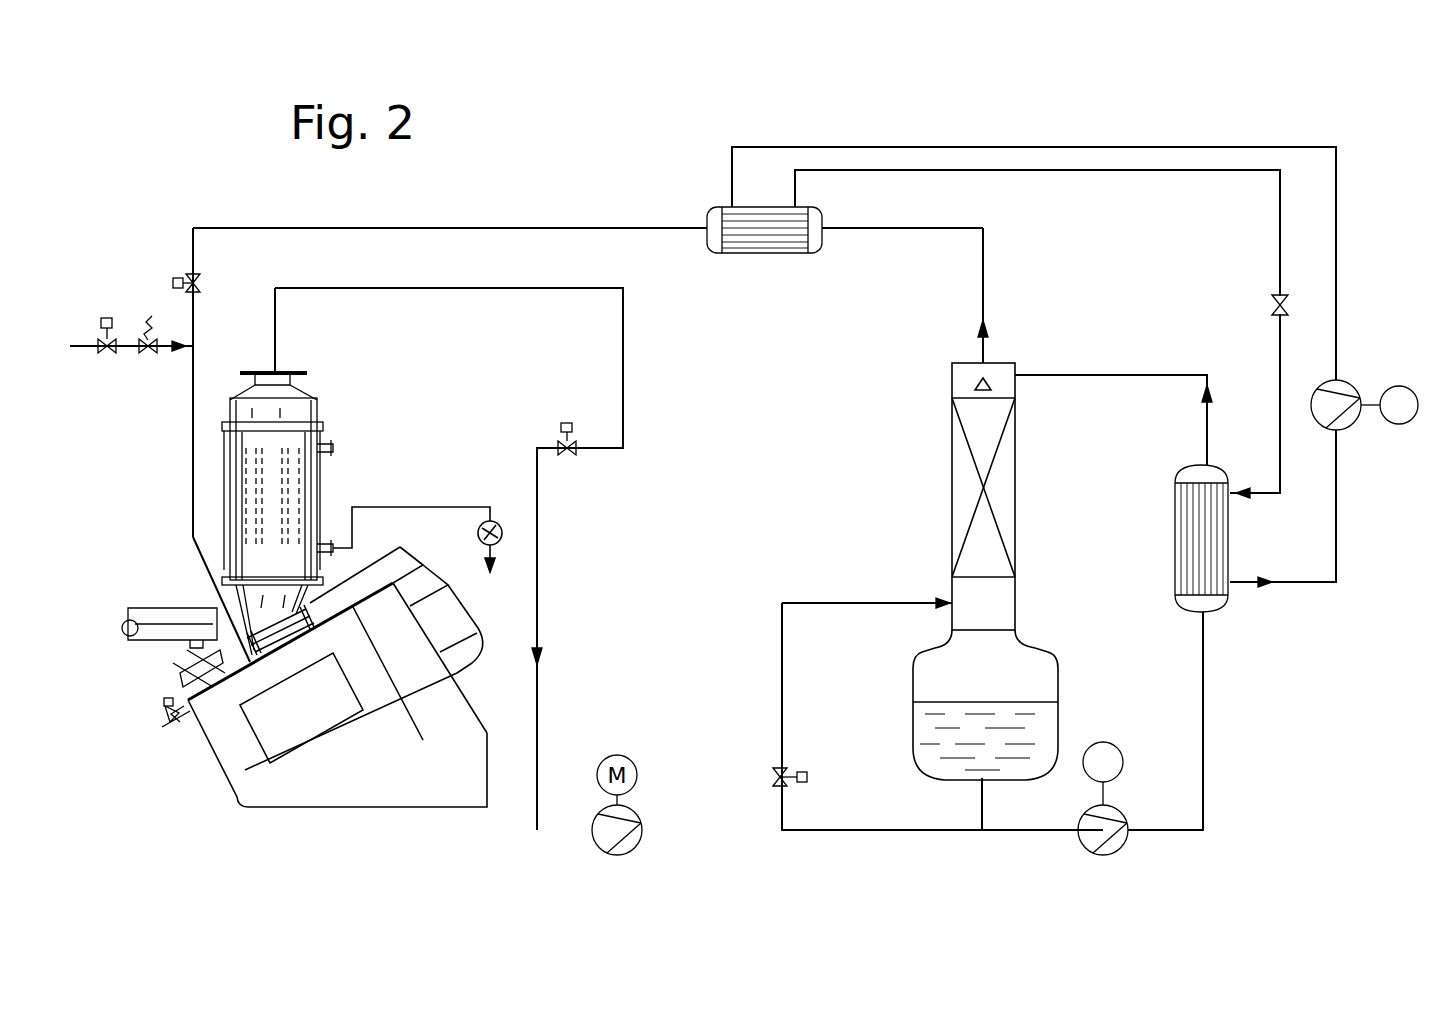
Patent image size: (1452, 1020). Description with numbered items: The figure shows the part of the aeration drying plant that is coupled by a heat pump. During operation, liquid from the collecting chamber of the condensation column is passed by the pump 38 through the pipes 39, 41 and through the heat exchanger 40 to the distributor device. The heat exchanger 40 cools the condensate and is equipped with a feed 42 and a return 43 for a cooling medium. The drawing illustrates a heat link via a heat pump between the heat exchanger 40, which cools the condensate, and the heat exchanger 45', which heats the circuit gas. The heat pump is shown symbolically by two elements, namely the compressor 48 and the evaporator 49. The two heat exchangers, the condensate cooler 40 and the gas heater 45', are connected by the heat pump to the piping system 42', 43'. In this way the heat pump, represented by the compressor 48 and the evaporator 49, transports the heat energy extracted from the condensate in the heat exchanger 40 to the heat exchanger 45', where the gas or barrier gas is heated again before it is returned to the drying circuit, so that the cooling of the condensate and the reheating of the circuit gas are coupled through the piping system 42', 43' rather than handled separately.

The pump 38 is at (1120, 843).
The pipe 39 is at (1206, 718).
The heat exchanger 40 is at (1213, 598).
The pipe 41 is at (1100, 375).
The feed 42 is at (1306, 519).
The piping system 42' is at (1091, 296).
The return 43 is at (1287, 606).
The piping system 43' is at (1064, 343).
The heat exchanger 45' is at (813, 212).
The compressor 48 is at (1343, 392).
The evaporator 49 is at (1284, 304).